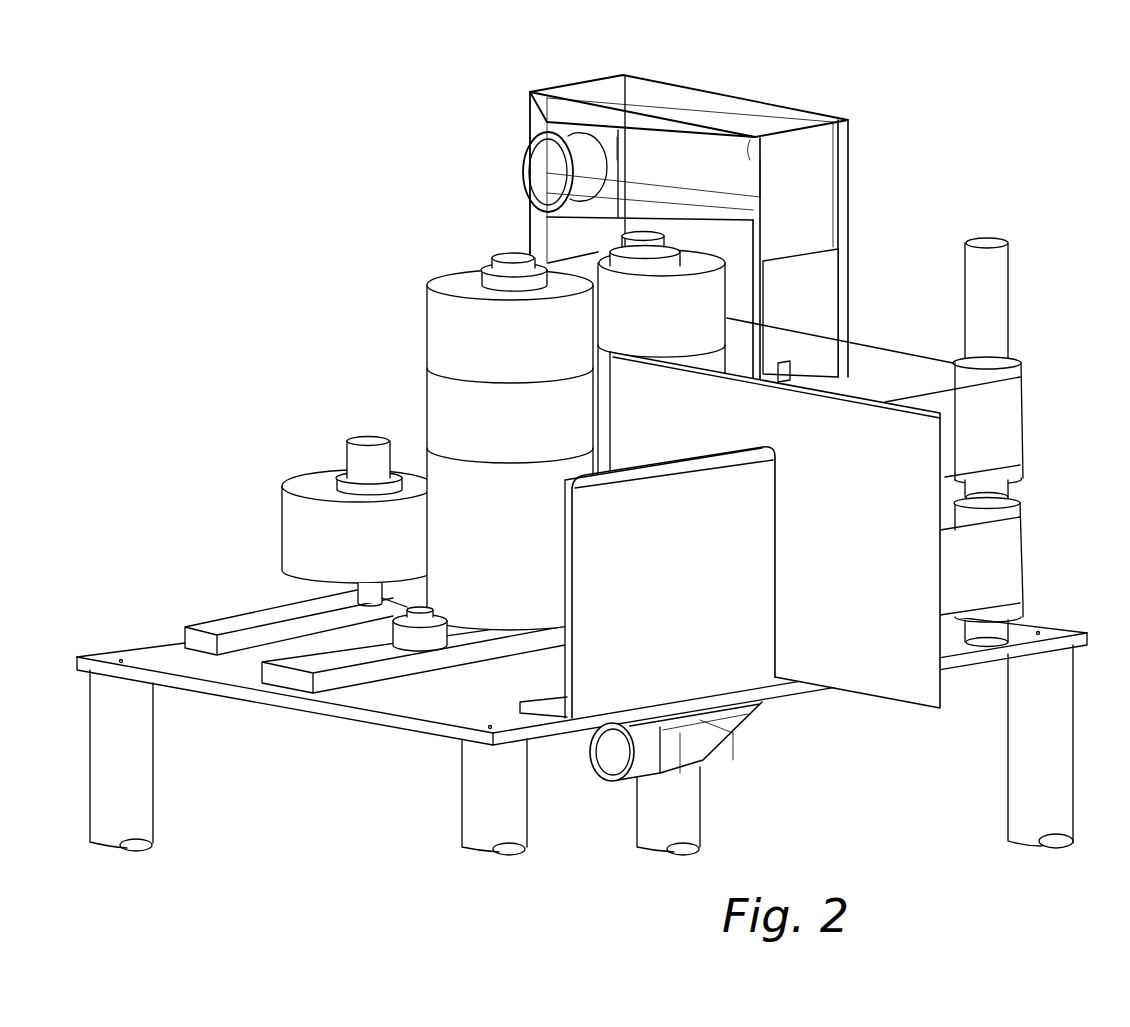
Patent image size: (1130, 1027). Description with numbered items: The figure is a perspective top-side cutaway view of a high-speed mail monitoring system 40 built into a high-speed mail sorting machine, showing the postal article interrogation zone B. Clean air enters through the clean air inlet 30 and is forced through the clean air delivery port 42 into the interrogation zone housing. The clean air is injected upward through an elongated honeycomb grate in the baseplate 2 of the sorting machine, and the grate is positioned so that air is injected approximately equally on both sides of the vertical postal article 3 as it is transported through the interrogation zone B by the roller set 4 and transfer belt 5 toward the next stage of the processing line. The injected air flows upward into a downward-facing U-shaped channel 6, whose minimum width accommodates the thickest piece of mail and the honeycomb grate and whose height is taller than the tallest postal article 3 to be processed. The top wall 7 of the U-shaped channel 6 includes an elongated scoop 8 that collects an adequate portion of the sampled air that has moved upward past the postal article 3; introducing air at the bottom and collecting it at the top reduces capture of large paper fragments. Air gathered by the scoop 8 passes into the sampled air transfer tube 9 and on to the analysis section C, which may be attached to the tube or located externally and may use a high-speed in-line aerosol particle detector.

The baseplate 2 is at (382, 700).
The postal article 3 is at (902, 563).
The roller set 4 is at (440, 326).
The transfer belt 5 is at (990, 422).
The U-shaped channel 6 is at (823, 280).
The top wall 7 is at (772, 102).
The elongated scoop 8 is at (630, 133).
The sampled air transfer tube 9 is at (525, 167).
The clean air inlet 30 is at (615, 782).
The high-speed mail monitoring system 40 is at (532, 672).
The clean air delivery port 42 is at (737, 640).
The postal article interrogation zone B is at (877, 165).
The analysis section C is at (512, 92).